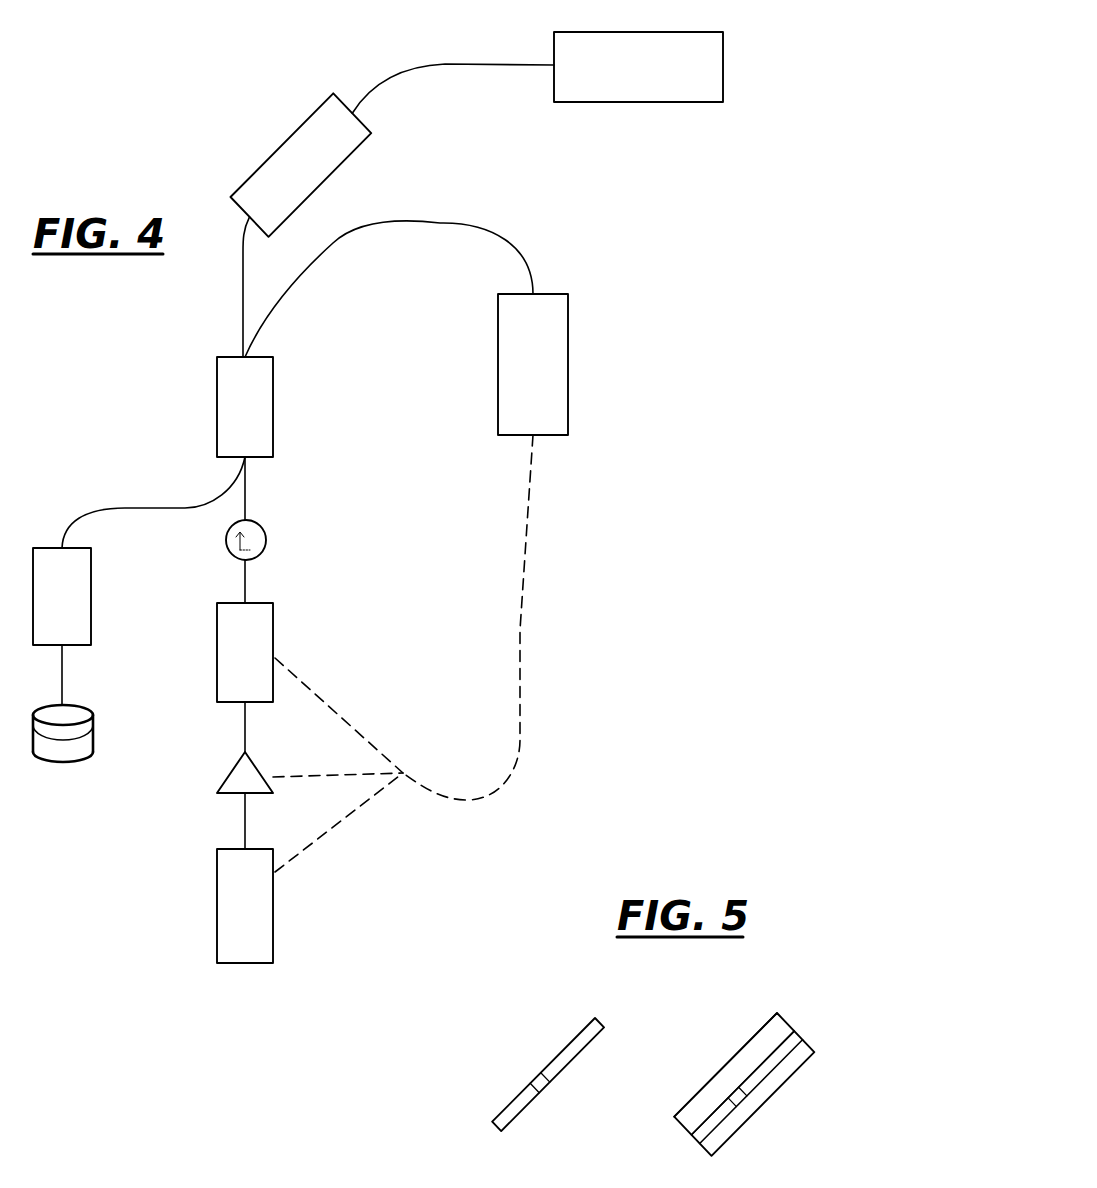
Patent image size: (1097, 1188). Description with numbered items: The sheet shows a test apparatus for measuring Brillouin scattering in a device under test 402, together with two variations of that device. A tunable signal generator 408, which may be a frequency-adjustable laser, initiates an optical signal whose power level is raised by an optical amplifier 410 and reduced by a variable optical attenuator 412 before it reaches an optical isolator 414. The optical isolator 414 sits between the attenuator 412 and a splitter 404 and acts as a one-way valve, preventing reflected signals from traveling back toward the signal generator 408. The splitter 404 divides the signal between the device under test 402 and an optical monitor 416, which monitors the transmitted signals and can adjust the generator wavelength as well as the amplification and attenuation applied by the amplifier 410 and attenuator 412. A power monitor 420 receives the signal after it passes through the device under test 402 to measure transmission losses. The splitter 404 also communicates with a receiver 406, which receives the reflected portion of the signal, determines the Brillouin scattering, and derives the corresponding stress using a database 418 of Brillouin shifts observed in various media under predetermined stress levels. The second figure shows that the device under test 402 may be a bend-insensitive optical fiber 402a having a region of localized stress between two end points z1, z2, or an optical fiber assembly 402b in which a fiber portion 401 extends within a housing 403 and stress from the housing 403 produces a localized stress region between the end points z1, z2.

In FIG. 4, the device under test (DUT) 402 is at (267, 158).
In FIG. 5, the bend-insensitive optical fiber 402a is at (564, 1066).
In FIG. 5, the optical fiber assembly 402b is at (750, 1024).
In FIG. 5, the fiber portion 401 is at (788, 1042).
In FIG. 5, the housing 403 is at (778, 1027).
In FIG. 4, the splitter 404 is at (245, 407).
In FIG. 4, the receiver 406 is at (62, 596).
In FIG. 4, the tunable signal generator 408 is at (245, 906).
In FIG. 4, the optical amplifier 410 is at (221, 781).
In FIG. 4, the variable optical attenuator 412 is at (245, 652).
In FIG. 4, the optical isolator 414 is at (258, 525).
In FIG. 4, the optical monitor 416 is at (533, 364).
In FIG. 4, the database 418 is at (63, 751).
In FIG. 4, the power monitor 420 is at (638, 67).
In FIG. 5, the end point z1 is at (548, 1091).
In FIG. 5, the end point z2 is at (553, 1082).